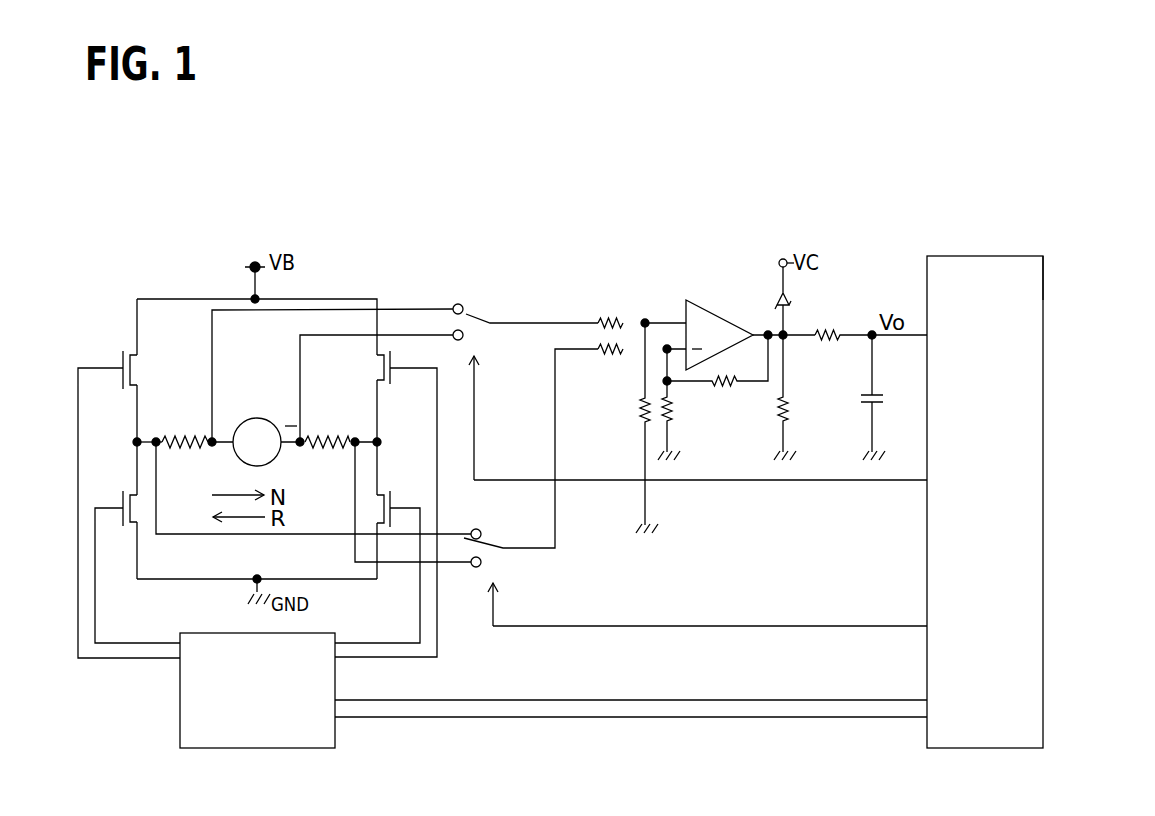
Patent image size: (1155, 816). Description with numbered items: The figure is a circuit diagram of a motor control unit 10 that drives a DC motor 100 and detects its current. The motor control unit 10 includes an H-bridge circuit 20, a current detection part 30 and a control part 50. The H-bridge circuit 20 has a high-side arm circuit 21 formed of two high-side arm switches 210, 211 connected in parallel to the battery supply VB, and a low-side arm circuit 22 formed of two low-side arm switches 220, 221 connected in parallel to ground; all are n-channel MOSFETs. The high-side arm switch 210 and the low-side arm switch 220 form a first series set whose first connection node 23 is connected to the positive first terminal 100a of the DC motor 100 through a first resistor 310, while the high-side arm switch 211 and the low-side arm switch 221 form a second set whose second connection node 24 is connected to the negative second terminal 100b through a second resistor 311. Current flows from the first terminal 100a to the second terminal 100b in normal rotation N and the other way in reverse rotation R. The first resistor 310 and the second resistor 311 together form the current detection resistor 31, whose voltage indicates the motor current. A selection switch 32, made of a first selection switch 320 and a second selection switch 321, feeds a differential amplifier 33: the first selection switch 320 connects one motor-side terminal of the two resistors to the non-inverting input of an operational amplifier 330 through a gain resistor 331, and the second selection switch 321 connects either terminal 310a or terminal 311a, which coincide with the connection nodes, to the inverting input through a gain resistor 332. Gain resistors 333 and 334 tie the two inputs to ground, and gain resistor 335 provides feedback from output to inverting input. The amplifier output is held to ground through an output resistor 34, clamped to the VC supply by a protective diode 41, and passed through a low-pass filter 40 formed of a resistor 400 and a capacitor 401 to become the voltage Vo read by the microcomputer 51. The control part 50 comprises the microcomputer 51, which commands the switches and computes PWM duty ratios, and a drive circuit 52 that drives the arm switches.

The motor control unit 10 is at (1076, 180).
The H-bridge circuit 20 is at (133, 294).
The high-side arm circuit 21 is at (381, 294).
The low-side arm circuit 22 is at (132, 588).
The first connection node 23 is at (134, 441).
The second connection node 24 is at (382, 441).
The current detection part 30 is at (588, 256).
The current detection resistor 31 is at (184, 386).
The selection switch 32 is at (457, 270).
The differential amplifier 33 is at (696, 283).
The output resistor 34 is at (790, 428).
The low-pass filter 40 is at (858, 316).
The protective diode 41 is at (789, 300).
The control part 50 is at (1005, 250).
The microcomputer 51 is at (1046, 256).
The drive circuit 52 is at (337, 745).
The DC motor 100 is at (256, 416).
The first terminal 100a is at (211, 450).
The second terminal 100b is at (297, 448).
The high-side arm switch 210 is at (122, 357).
The high-side arm switch 211 is at (393, 378).
The low-side arm switch 220 is at (120, 522).
The low-side arm switch 221 is at (395, 505).
The first resistor 310 is at (180, 450).
The terminal 310a is at (158, 436).
The second resistor 311 is at (344, 450).
The terminal 311a is at (356, 434).
The first selection switch 320 is at (468, 311).
The second selection switch 321 is at (487, 540).
The operational amplifier 330 is at (716, 311).
The gain resistor 331 is at (612, 318).
The gain resistor 332 is at (610, 356).
The gain resistor 333 is at (640, 415).
The gain resistor 334 is at (673, 416).
The gain resistor 335 is at (727, 386).
The resistor 400 is at (832, 346).
The capacitor 401 is at (880, 392).